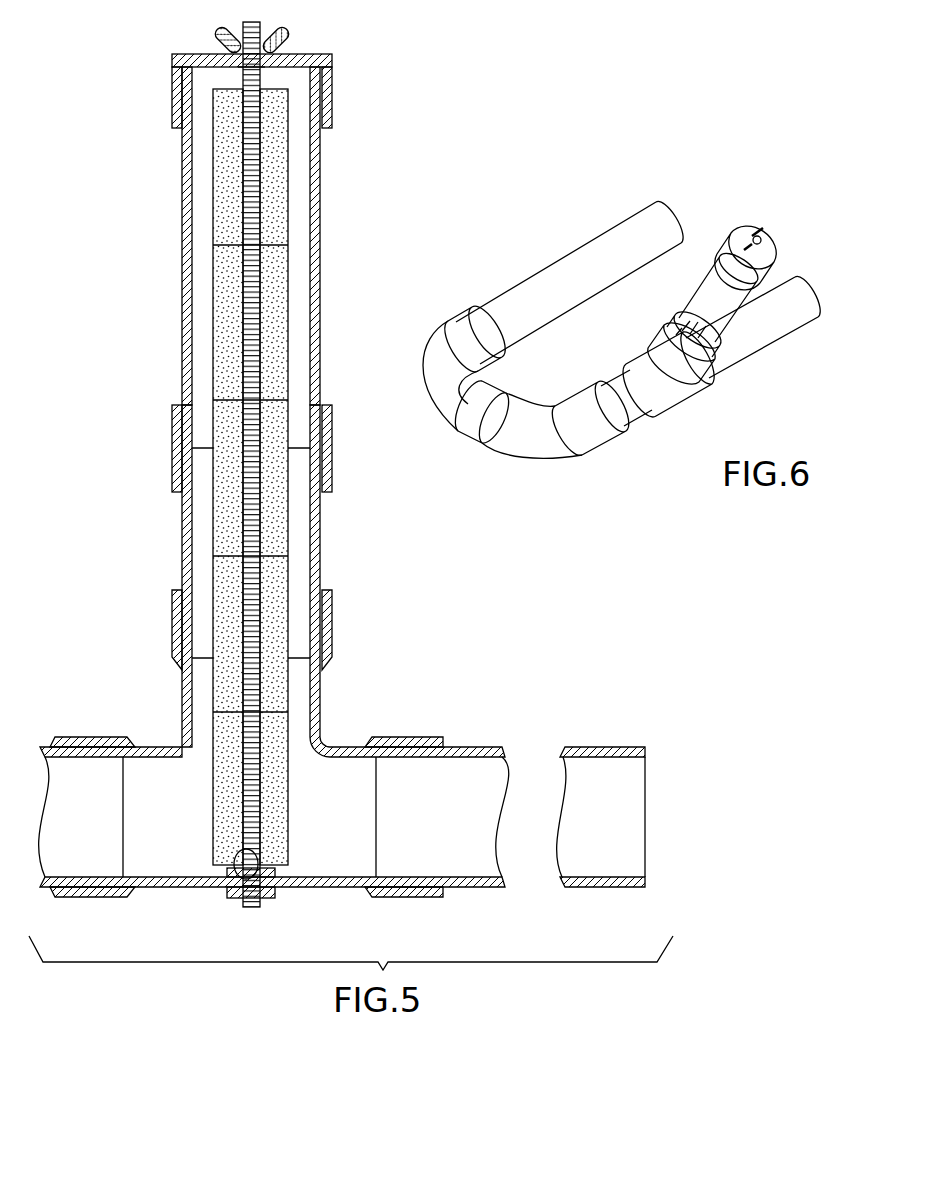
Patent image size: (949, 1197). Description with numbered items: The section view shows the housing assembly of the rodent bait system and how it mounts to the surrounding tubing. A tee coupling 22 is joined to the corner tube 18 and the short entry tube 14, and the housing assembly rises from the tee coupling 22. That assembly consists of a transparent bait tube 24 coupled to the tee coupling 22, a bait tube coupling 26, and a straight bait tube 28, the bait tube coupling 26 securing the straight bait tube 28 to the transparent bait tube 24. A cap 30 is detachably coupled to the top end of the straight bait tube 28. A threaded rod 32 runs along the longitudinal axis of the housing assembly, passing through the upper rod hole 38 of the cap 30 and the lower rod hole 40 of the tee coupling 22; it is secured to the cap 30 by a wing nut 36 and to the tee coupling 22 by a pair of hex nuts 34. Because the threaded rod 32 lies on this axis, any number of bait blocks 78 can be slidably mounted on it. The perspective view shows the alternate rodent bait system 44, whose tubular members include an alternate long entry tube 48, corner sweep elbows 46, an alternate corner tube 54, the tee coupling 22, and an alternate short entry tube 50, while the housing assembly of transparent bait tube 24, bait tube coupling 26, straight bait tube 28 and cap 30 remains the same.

In FIG. 5, the short entry tube 14 is at (585, 748).
In FIG. 5, the corner tube 18 is at (90, 748).
In FIG. 5, the tee coupling 22 is at (175, 628).
In FIG. 6, the tee coupling 22 is at (665, 395).
In FIG. 5, the transparent bait tube 24 is at (318, 540).
In FIG. 6, the transparent bait tube 24 is at (685, 330).
In FIG. 5, the bait tube coupling 26 is at (175, 455).
In FIG. 6, the bait tube coupling 26 is at (724, 342).
In FIG. 5, the straight bait tube 28 is at (315, 213).
In FIG. 6, the straight bait tube 28 is at (710, 290).
In FIG. 5, the cap 30 is at (177, 98).
In FIG. 6, the cap 30 is at (775, 255).
In FIG. 5, the threaded rod 32 is at (243, 208).
In FIG. 6, the threaded rod 32 is at (757, 236).
In FIG. 5, the hex nuts 34 is at (280, 876).
In FIG. 5, the wing nut 36 is at (225, 35).
In FIG. 6, the wing nut 36 is at (741, 248).
In FIG. 5, the upper rod hole 38 is at (263, 72).
In FIG. 5, the lower rod hole 40 is at (234, 863).
In FIG. 6, the alternate rodent bait system 44 is at (535, 232).
In FIG. 6, the corner sweep elbows 46 is at (425, 365).
In FIG. 6, the alternate long entry tube 48 is at (640, 228).
In FIG. 6, the alternate short entry tube 50 is at (785, 330).
In FIG. 6, the alternate corner tube 54 is at (605, 390).
In FIG. 5, the bait blocks 78 is at (214, 232).
In FIG. 6, the bait blocks 78 is at (718, 380).